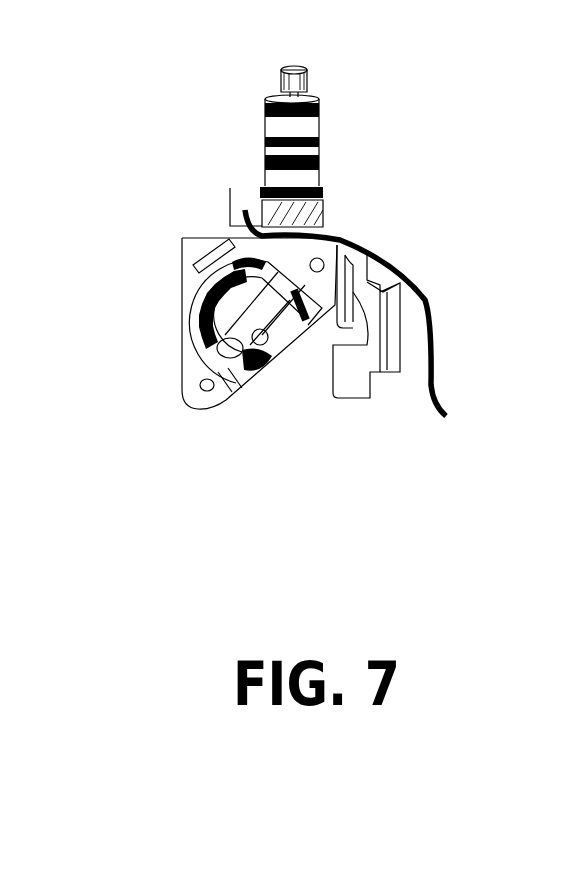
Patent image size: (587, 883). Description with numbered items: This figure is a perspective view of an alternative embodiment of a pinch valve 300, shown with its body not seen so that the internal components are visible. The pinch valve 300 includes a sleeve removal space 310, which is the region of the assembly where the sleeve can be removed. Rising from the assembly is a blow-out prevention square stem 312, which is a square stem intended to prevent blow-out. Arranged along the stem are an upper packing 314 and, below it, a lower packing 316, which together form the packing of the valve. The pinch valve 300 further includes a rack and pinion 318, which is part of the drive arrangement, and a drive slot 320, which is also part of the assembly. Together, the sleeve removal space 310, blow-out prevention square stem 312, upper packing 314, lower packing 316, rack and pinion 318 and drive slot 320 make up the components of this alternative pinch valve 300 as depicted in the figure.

The pinch valve 300 is at (95, 74).
The sleeve removal space 310 is at (299, 419).
The blow-out prevention square stem 312 is at (278, 100).
The upper packing 314 is at (272, 140).
The lower packing 316 is at (272, 172).
The rack and pinion 318 is at (262, 195).
The drive slot 320 is at (377, 324).